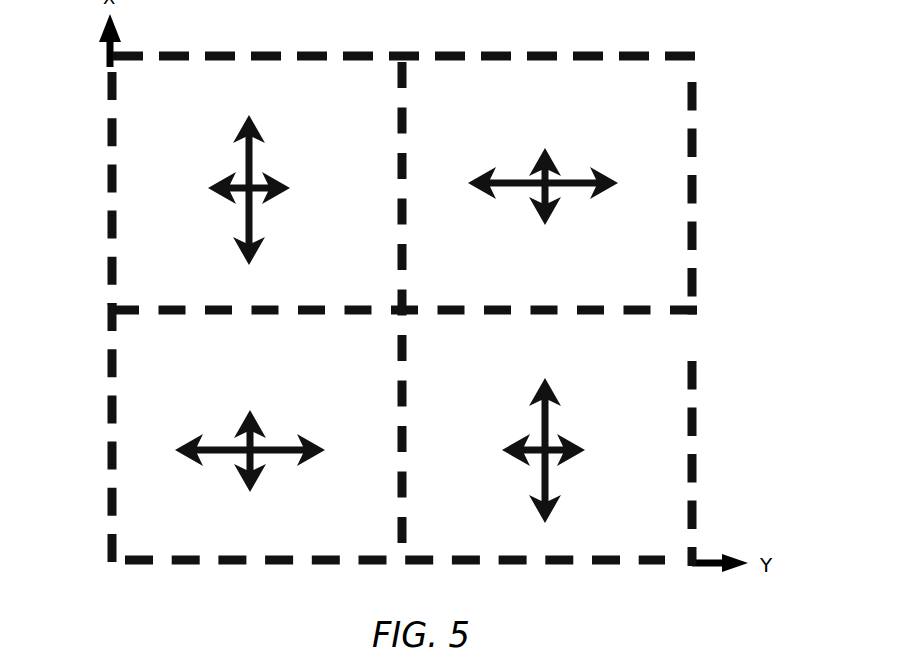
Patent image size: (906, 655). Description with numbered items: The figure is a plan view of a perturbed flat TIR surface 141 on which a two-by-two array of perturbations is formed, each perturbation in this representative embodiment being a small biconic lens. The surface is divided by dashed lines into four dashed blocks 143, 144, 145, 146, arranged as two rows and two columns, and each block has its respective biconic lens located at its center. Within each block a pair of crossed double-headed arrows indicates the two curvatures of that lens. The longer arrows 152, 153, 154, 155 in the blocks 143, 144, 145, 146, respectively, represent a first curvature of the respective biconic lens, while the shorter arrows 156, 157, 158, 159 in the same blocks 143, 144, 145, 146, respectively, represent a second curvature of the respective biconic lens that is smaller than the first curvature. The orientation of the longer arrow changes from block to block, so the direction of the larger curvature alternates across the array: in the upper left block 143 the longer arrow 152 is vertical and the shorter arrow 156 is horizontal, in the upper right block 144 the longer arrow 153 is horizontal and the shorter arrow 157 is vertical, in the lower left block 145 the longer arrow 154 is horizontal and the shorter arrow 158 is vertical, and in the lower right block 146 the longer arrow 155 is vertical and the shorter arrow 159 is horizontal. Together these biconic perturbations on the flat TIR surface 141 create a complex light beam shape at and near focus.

The perturbed flat TIR surface 141 is at (650, 78).
The dashed block 143 is at (108, 155).
The dashed block 144 is at (695, 175).
The dashed block 145 is at (108, 390).
The dashed block 146 is at (697, 410).
The longer arrow 152 is at (253, 125).
The longer arrow 153 is at (570, 183).
The longer arrow 154 is at (300, 440).
The longer arrow 155 is at (548, 378).
The shorter arrow 156 is at (277, 180).
The shorter arrow 157 is at (545, 148).
The shorter arrow 158 is at (252, 410).
The shorter arrow 159 is at (570, 450).